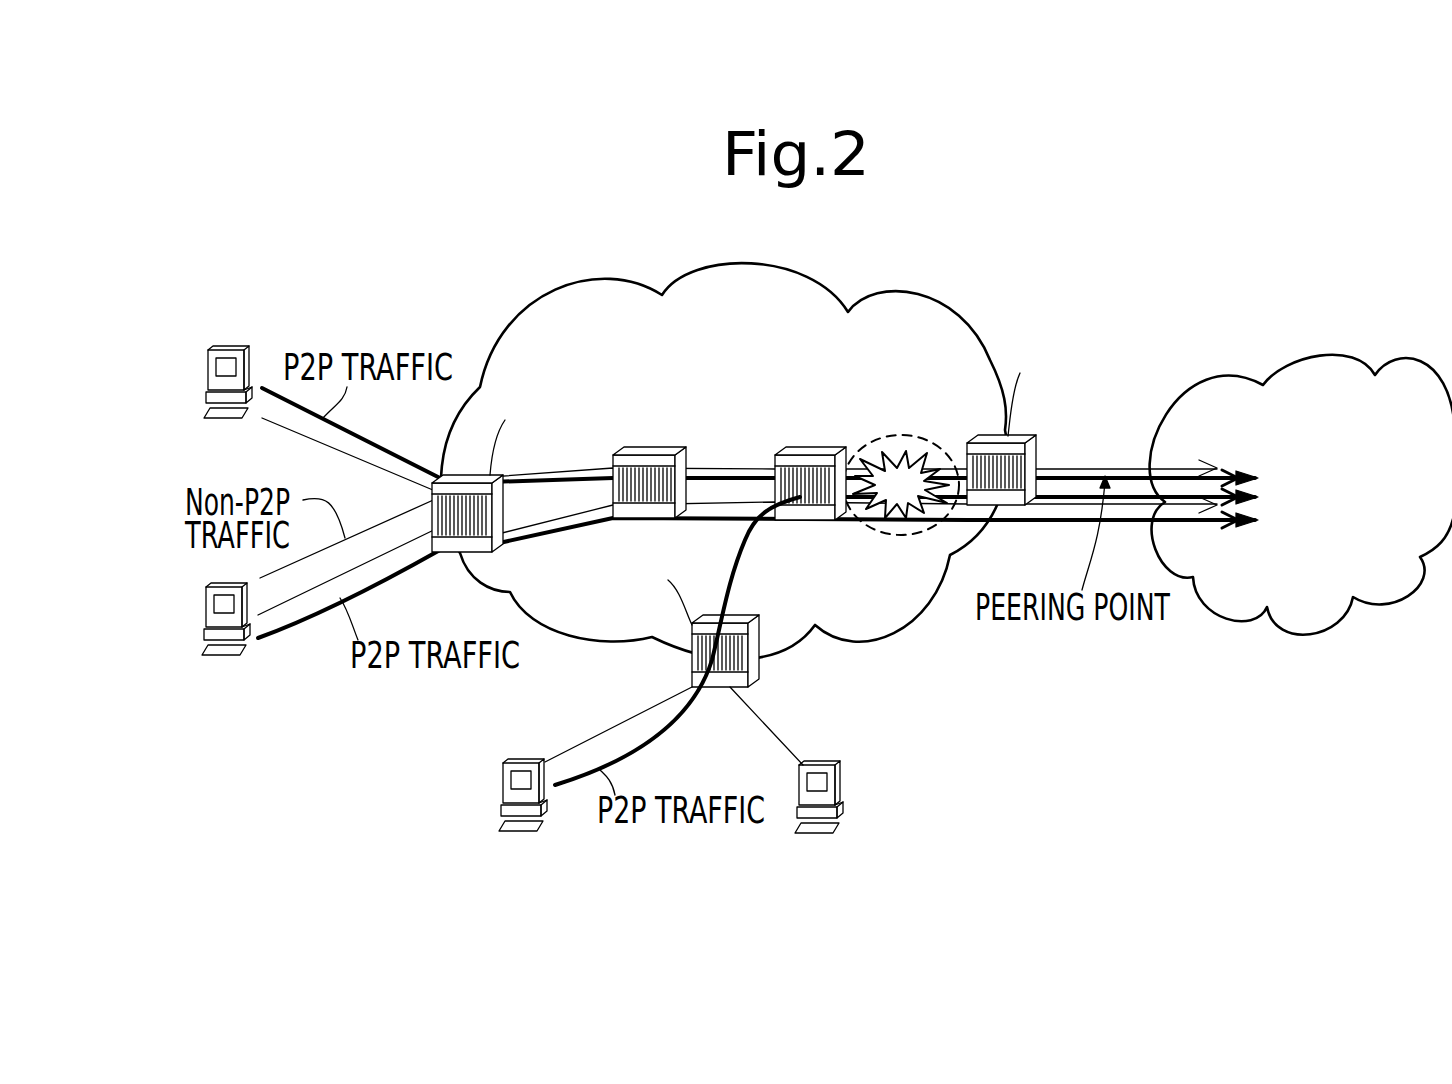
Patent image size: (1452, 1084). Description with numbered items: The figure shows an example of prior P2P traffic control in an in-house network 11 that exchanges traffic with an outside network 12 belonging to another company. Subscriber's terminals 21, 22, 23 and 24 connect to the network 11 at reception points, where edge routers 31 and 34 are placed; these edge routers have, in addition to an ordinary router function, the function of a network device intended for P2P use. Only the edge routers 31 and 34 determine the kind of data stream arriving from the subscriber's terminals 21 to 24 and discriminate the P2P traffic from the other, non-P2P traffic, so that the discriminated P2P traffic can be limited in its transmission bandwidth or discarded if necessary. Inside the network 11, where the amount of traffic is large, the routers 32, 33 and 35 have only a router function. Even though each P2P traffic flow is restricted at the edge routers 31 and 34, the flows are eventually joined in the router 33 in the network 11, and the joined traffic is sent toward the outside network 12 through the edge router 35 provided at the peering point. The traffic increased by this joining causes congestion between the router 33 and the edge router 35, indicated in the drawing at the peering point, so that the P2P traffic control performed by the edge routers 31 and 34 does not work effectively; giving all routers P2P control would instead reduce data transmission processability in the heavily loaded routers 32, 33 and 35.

The network 11 is at (765, 262).
The outside network 12 is at (1328, 358).
The subscriber's terminal 21 is at (228, 348).
The subscriber's terminal 22 is at (205, 612).
The subscriber's terminal 23 is at (500, 790).
The subscriber's terminal 24 is at (842, 788).
The edge router 31 is at (490, 480).
The router 32 is at (652, 455).
The router 33 is at (800, 455).
The edge router 34 is at (760, 630).
The edge router 35 is at (1036, 450).